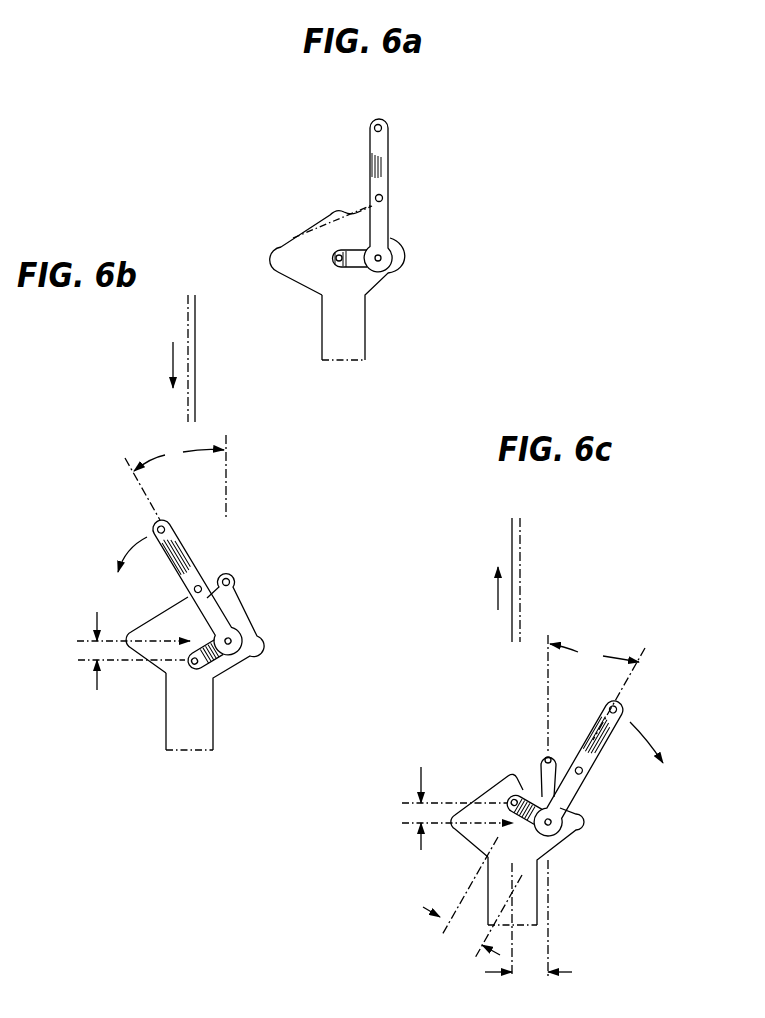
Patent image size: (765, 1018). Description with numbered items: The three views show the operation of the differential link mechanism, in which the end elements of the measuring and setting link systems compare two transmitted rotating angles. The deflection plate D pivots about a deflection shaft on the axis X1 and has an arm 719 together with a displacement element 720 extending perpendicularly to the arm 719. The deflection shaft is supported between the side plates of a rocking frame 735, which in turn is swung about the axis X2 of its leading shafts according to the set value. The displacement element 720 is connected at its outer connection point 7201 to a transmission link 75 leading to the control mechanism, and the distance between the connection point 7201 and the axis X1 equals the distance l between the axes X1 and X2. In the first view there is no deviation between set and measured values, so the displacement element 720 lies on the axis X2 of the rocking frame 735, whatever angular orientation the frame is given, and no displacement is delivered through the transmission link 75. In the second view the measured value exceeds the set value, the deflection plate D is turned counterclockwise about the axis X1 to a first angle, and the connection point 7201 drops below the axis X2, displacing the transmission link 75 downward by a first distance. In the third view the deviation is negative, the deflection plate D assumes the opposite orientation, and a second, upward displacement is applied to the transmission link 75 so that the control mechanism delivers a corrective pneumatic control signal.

In FIG. 6b, the transmission link 75 is at (195, 315).
In FIG. 6c, the transmission link 75 is at (522, 575).
In FIG. 6a, the arm 719 is at (389, 172).
In FIG. 6b, the arm 719 is at (187, 553).
In FIG. 6c, the arm 719 is at (588, 781).
In FIG. 6a, the displacement element 720 is at (337, 255).
In FIG. 6b, the displacement element 720 is at (211, 665).
In FIG. 6b, the connection point 7201 is at (188, 664).
In FIG. 6c, the connection point 7201 is at (515, 799).
In FIG. 6a, the rocking frame 735 is at (366, 308).
In FIG. 6b, the rocking frame 735 is at (163, 712).
In FIG. 6c, the rocking frame 735 is at (507, 773).
In FIG. 6a, the axis of deflection shaft X1 is at (385, 270).
In FIG. 6b, the axis of deflection shaft X1 is at (226, 630).
In FIG. 6c, the axis of deflection shaft X1 is at (563, 830).
In FIG. 6a, the axis of leading shafts X2 is at (336, 258).
In FIG. 6b, the axis of leading shafts X2 is at (191, 628).
In FIG. 6c, the axis of leading shafts X2 is at (513, 825).
In FIG. 6a, the deflection plate D is at (393, 228).
In FIG. 6b, the deflection plate D is at (200, 567).
In FIG. 6c, the deflection plate D is at (608, 758).
In FIG. 6c, the distance between axes l is at (497, 914).